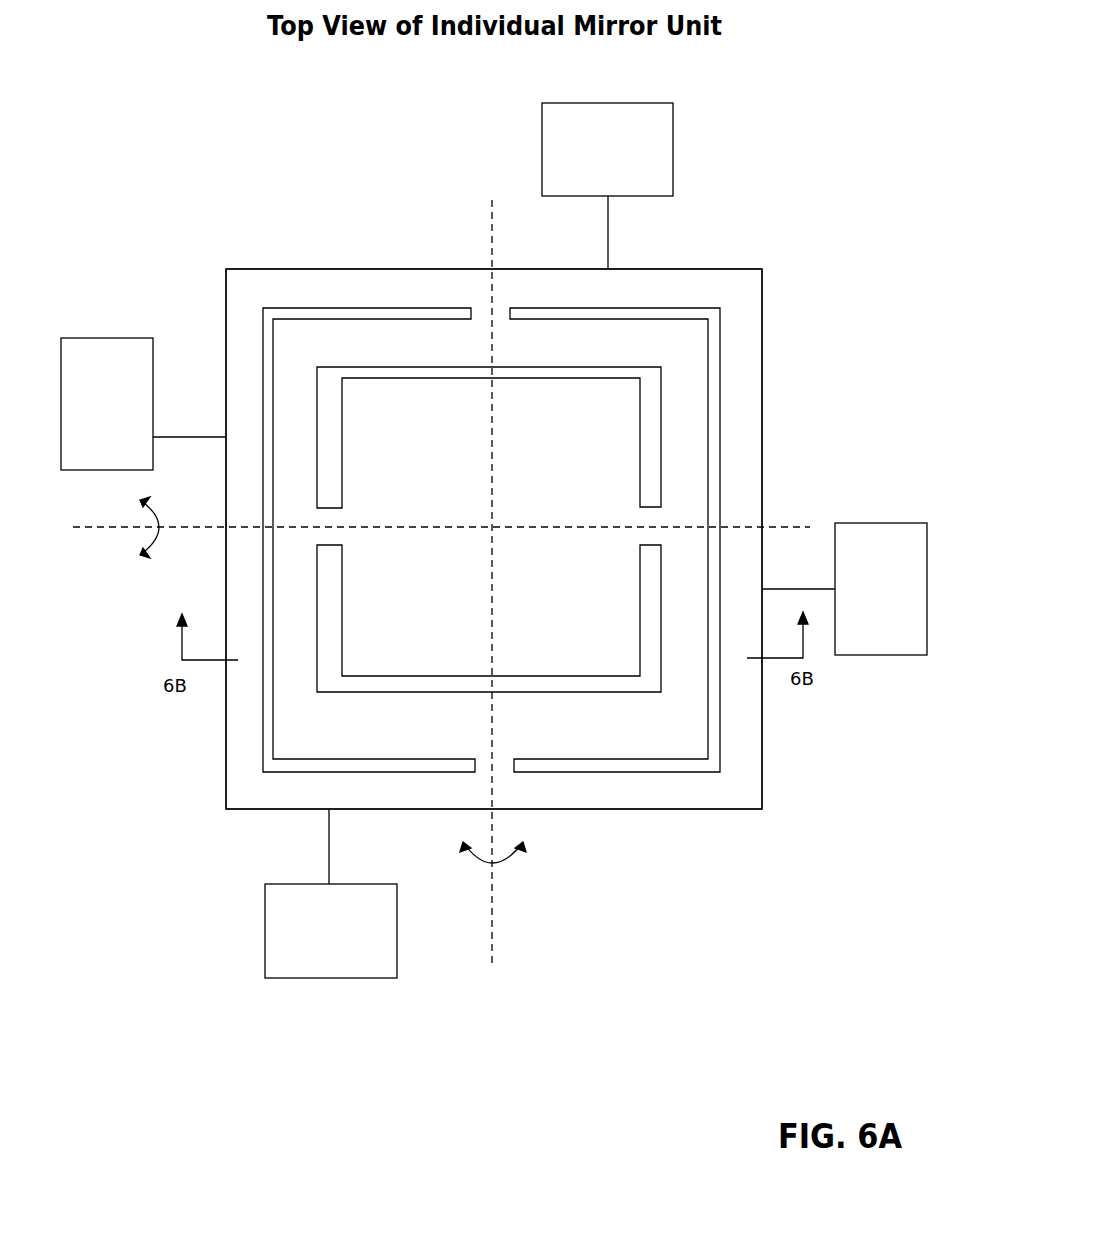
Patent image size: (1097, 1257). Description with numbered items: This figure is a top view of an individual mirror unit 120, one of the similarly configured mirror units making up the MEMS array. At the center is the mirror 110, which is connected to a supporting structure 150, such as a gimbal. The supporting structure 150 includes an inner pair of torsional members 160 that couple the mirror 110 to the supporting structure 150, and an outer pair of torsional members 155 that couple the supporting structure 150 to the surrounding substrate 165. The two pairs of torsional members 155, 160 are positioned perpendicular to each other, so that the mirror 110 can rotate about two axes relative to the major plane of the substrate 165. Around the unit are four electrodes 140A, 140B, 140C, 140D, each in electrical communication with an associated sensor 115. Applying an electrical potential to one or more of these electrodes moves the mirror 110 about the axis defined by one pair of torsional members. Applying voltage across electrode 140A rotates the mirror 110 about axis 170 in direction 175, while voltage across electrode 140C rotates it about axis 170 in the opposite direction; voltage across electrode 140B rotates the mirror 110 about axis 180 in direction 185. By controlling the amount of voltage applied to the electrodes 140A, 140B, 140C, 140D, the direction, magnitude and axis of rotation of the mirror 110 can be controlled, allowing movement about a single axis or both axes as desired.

The mirror 110 is at (567, 490).
The sensor 115 is at (494, 540).
The mirror unit 120 is at (226, 208).
The electrode 140A is at (608, 240).
The electrode 140B is at (790, 587).
The electrode 140C is at (329, 843).
The electrode 140D is at (193, 437).
The supporting structure 150 is at (292, 738).
The outer pair of torsional members 155 is at (484, 310).
The inner pair of torsional members 160 is at (328, 523).
The substrate 165 is at (745, 771).
The axis 170 is at (117, 528).
The direction 175 is at (147, 572).
The axis 180 is at (495, 929).
The direction 185 is at (528, 857).